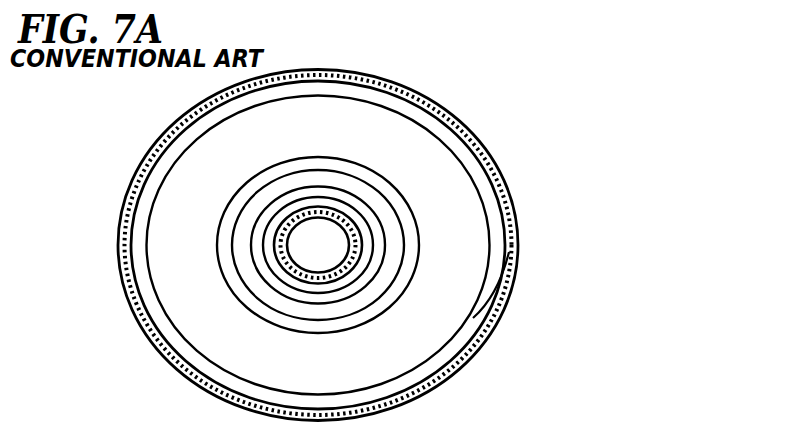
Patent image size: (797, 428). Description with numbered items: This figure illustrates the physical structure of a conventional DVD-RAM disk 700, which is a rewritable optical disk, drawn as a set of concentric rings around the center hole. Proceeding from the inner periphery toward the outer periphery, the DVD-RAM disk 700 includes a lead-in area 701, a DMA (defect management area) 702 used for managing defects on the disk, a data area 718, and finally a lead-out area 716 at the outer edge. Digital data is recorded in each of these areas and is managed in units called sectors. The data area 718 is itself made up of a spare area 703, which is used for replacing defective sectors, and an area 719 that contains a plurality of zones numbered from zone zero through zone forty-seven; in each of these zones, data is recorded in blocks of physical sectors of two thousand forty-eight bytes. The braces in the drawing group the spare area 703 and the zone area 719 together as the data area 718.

The optical disc (conventional art) 700 is at (443, 69).
The inner clamping area / center hole ring 701 is at (330, 212).
The lead-in area 702 is at (364, 233).
The data recording area 703 is at (383, 240).
The outer peripheral area 716 is at (450, 375).
The recording zones (Zone 0 through Zone 47) with data area 718 is at (700, 145).
The zones 0 to 47 719 is at (387, 305).